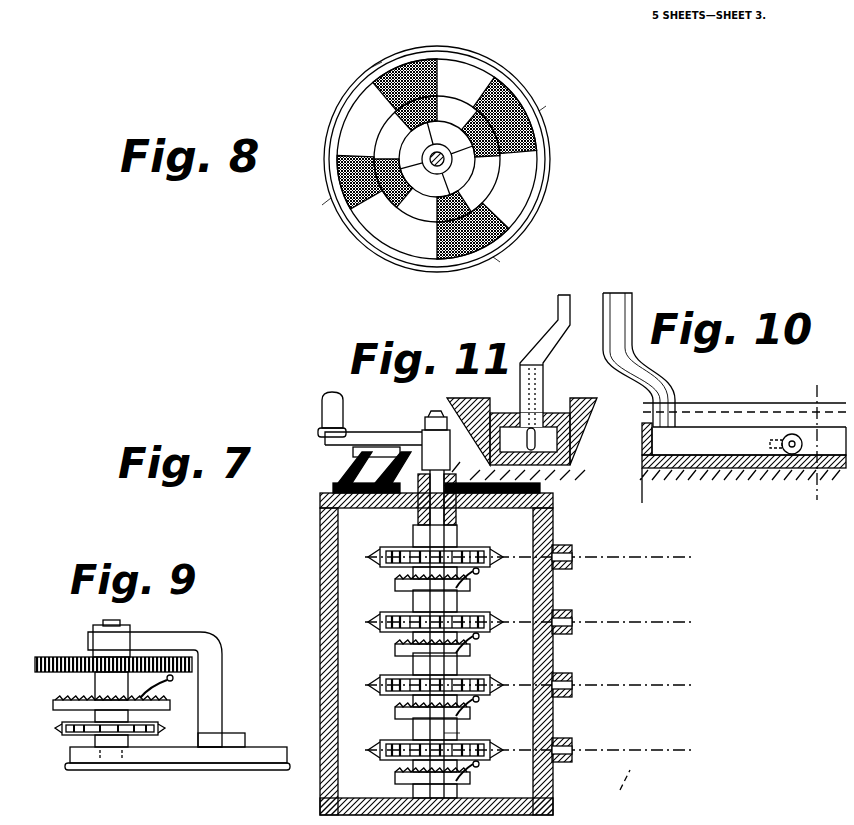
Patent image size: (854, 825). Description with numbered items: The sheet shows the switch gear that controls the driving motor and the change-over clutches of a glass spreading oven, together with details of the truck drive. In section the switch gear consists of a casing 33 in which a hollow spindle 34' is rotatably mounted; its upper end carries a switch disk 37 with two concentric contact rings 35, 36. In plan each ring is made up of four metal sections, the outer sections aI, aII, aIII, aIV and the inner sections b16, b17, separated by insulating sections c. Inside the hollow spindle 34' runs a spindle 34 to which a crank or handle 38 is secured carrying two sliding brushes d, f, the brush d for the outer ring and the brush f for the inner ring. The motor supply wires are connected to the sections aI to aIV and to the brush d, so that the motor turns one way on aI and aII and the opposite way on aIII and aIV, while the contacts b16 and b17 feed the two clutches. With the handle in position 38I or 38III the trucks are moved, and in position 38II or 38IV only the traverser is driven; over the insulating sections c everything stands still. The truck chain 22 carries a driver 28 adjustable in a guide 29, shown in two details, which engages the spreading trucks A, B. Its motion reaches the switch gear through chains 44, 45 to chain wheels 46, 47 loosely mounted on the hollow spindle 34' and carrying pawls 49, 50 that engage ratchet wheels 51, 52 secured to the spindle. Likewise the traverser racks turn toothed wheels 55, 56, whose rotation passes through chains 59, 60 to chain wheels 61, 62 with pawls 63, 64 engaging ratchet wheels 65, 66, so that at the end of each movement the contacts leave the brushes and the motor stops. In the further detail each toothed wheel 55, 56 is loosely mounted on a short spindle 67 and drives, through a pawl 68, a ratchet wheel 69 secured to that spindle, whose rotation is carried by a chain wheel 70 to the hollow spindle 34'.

In FIG. 8, the casing 33 is at (517, 92).
In FIG. 7, the casing 33 is at (326, 580).
In FIG. 8, the spindle 34 is at (450, 159).
In FIG. 7, the spindle 34 is at (431, 604).
In FIG. 7, the hollow spindle 34' is at (486, 734).
In FIG. 7, the contact ring 35 is at (370, 506).
In FIG. 7, the contact ring 36 is at (333, 488).
In FIG. 7, the switch disk 37 is at (458, 484).
In FIG. 7, the crank or handle 38 is at (388, 432).
In FIG. 8, the handle position I 38I is at (382, 45).
In FIG. 8, the handle position II 38II is at (546, 106).
In FIG. 8, the handle position III 38III is at (500, 262).
In FIG. 8, the handle position IV 38IV is at (322, 205).
In FIG. 8, the metal contact section aI is at (395, 85).
In FIG. 8, the metal contact section aII is at (517, 130).
In FIG. 8, the metal contact section aIII is at (502, 214).
In FIG. 8, the metal contact section aIV is at (354, 177).
In FIG. 8, the contact section b16 is at (445, 105).
In FIG. 8, the contact section b17 is at (482, 138).
In FIG. 8, the insulating section c is at (478, 88).
In FIG. 7, the sliding brush d is at (345, 468).
In FIG. 7, the sliding brush f is at (398, 458).
In FIG. 7, the chain 44 is at (660, 562).
In FIG. 7, the chain 45 is at (664, 626).
In FIG. 7, the chain wheel 46 is at (380, 557).
In FIG. 7, the chain wheel 47 is at (380, 622).
In FIG. 7, the pawl 49 is at (478, 578).
In FIG. 7, the pawl 50 is at (478, 643).
In FIG. 7, the ratchet wheel 51 is at (400, 586).
In FIG. 7, the ratchet wheel 52 is at (400, 651).
In FIG. 7, the chain 59 is at (666, 690).
In FIG. 7, the chain 60 is at (662, 755).
In FIG. 7, the chain wheel 61 is at (380, 685).
In FIG. 7, the chain wheel 62 is at (380, 750).
In FIG. 7, the pawl 63 is at (478, 704).
In FIG. 7, the pawl 64 is at (478, 769).
In FIG. 7, the ratchet wheel 65 is at (400, 714).
In FIG. 7, the ratchet wheel 66 is at (400, 778).
In FIG. 7, the spreading truck A is at (630, 797).
In FIG. 7, the spreading truck B is at (406, 814).
In FIG. 10, the chain 22 is at (818, 470).
In FIG. 11, the driver or cam 28 is at (546, 336).
In FIG. 10, the driver or cam 28 is at (630, 306).
In FIG. 11, the guide 29 is at (557, 412).
In FIG. 10, the guide 29 is at (738, 414).
In FIG. 9, the toothed wheel 55 is at (40, 664).
In FIG. 9, the toothed wheel 56 is at (110, 643).
In FIG. 9, the short spindle 67 is at (100, 696).
In FIG. 9, the pawl 68 is at (162, 696).
In FIG. 9, the ratchet wheel 69 is at (62, 725).
In FIG. 9, the chain wheel 70 is at (110, 725).